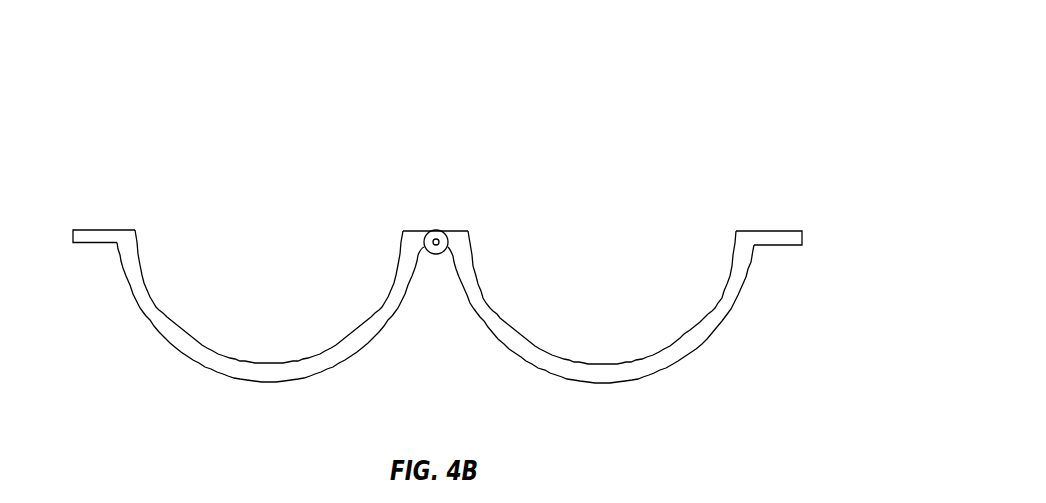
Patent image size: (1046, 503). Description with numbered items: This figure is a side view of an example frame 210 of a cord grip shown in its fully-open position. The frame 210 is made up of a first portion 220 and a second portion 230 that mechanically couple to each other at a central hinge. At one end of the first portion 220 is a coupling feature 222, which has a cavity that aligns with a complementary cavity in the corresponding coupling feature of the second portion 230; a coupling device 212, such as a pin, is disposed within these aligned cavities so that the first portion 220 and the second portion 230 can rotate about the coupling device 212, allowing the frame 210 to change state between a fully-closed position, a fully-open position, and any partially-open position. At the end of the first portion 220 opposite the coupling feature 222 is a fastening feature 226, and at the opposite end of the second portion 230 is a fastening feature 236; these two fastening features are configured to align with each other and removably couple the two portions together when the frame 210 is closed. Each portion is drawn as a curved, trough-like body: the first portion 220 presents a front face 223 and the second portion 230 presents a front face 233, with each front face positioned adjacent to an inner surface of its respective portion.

The frame 210 is at (775, 143).
The coupling device 212 is at (434, 238).
The first portion 220 is at (276, 222).
The coupling feature 222 is at (437, 255).
The front face 223 is at (266, 381).
The fastening feature 226 is at (93, 229).
The second portion 230 is at (607, 222).
The front face 233 is at (599, 382).
The fastening feature 236 is at (776, 230).